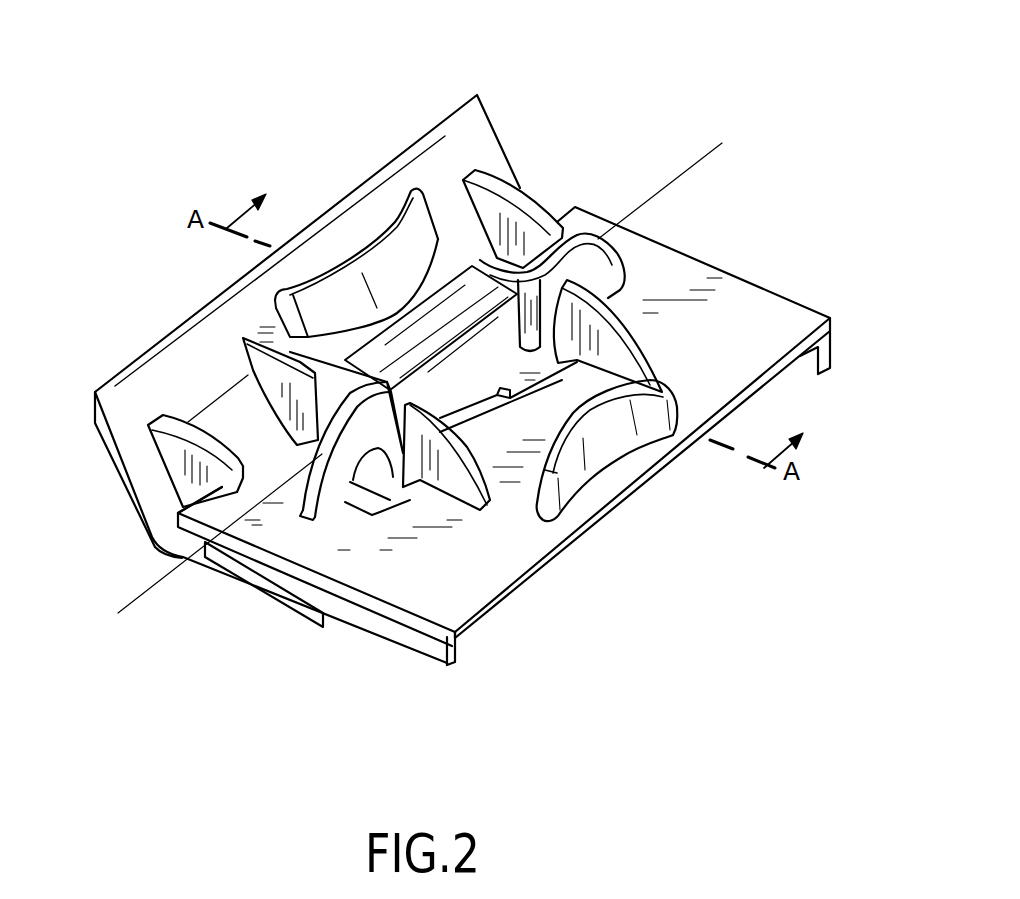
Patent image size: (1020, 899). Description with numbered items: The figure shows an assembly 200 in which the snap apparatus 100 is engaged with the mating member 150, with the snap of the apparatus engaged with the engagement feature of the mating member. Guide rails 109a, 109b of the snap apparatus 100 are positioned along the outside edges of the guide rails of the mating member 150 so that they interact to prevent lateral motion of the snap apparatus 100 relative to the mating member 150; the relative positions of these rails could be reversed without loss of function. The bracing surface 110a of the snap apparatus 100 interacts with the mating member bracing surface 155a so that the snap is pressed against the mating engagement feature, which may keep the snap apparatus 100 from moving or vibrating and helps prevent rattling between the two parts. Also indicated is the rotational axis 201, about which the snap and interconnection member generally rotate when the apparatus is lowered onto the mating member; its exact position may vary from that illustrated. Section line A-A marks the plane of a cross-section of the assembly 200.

The snap apparatus 100 is at (784, 294).
The guide rail 109a is at (456, 645).
The guide rail 109b is at (832, 368).
The bracing surface 110a is at (250, 480).
The mating member 150 is at (118, 372).
The mating member bracing surface 155a is at (235, 488).
The assembly 200 is at (357, 272).
The rotational axis 201 is at (704, 163).